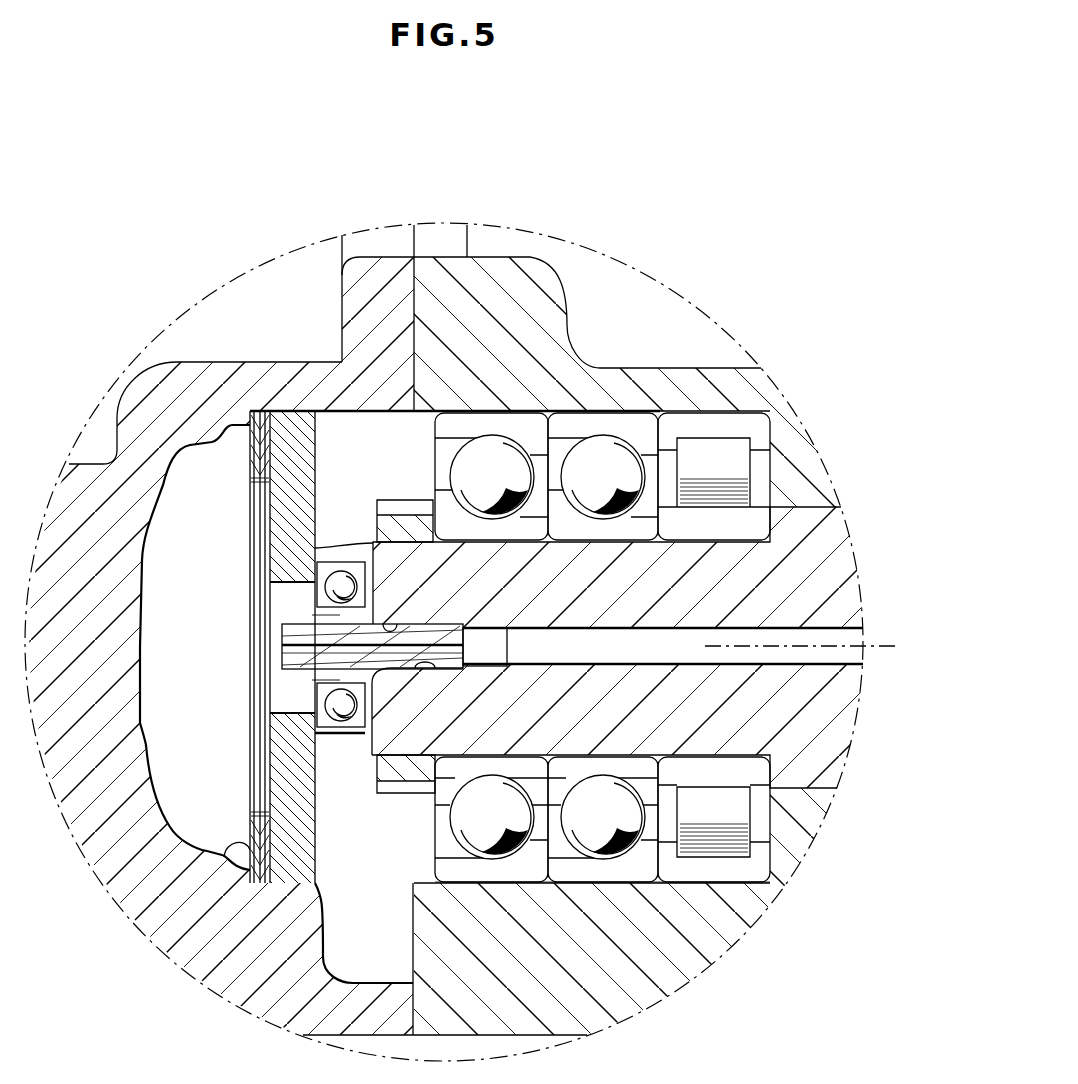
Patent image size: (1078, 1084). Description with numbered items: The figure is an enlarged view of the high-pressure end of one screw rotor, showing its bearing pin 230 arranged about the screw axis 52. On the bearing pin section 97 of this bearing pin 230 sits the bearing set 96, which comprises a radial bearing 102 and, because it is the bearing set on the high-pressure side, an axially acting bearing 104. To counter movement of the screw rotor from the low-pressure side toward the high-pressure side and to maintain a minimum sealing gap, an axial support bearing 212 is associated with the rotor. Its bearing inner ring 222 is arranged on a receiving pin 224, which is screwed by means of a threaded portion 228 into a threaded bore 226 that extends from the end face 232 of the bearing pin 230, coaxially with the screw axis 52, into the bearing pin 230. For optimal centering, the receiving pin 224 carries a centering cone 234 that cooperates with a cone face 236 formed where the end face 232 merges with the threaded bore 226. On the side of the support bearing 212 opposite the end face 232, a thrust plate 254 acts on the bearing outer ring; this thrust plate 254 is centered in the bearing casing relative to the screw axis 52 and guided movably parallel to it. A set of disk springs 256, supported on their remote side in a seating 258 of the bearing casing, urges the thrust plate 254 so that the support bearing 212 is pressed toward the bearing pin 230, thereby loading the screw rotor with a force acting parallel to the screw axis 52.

The screw axis 52 is at (805, 640).
The bearing set 96 is at (633, 888).
The bearing pin section 97 is at (661, 600).
The radial bearing 102 is at (750, 423).
The axially acting bearing 104 is at (530, 425).
The axial support bearing 212 is at (349, 731).
The bearing inner ring 222 is at (325, 605).
The receiving pin 224 is at (330, 625).
The threaded bore 226 is at (430, 658).
The threaded portion 228 is at (450, 670).
The bearing pin 230 is at (574, 600).
The end face 232 is at (370, 553).
The centering cone 234 is at (332, 702).
The cone face 236 is at (393, 628).
The thrust plate 254 is at (283, 495).
The disk springs 256 is at (227, 853).
The seating 258 is at (305, 420).